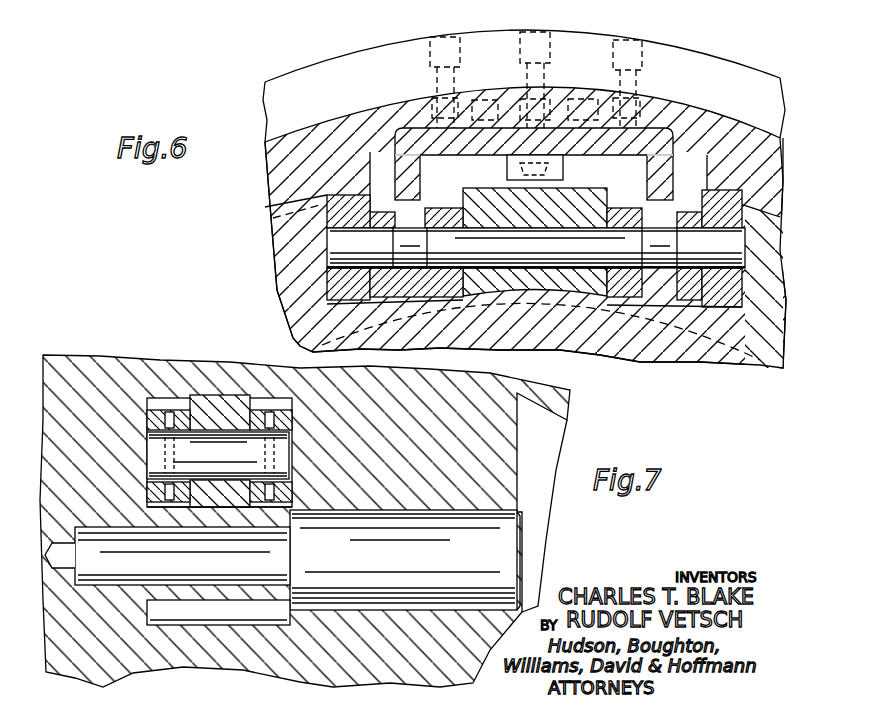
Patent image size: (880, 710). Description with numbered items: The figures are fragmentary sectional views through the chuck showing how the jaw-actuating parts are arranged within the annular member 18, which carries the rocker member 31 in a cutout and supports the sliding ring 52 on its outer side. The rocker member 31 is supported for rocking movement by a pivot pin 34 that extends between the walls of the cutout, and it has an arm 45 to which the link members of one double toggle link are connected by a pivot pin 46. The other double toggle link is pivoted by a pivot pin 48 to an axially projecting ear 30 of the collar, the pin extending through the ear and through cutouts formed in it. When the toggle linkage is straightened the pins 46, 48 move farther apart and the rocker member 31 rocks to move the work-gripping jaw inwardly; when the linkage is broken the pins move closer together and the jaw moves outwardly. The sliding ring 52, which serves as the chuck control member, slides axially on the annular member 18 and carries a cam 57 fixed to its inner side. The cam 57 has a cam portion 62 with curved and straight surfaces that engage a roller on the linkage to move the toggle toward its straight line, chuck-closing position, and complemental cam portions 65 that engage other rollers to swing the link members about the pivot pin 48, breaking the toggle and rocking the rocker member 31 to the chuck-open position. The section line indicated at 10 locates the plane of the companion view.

In FIG. 6, the section line indicator 10 is at (700, 48).
In FIG. 6, the annular member 18 is at (627, 343).
In FIG. 7, the annular member 18 is at (134, 352).
In FIG. 6, the ear 30 is at (467, 204).
In FIG. 7, the rocker member 31 is at (160, 513).
In FIG. 7, the pivot pin 34 is at (110, 558).
In FIG. 7, the arm 45 is at (223, 406).
In FIG. 7, the pivot pin 46 is at (157, 453).
In FIG. 6, the pivot pin 48 is at (340, 245).
In FIG. 6, the sliding ring 52 is at (288, 177).
In FIG. 6, the cam 57 is at (488, 158).
In FIG. 6, the cam portion 62 is at (562, 166).
In FIG. 6, the cam portions 65 is at (405, 181).